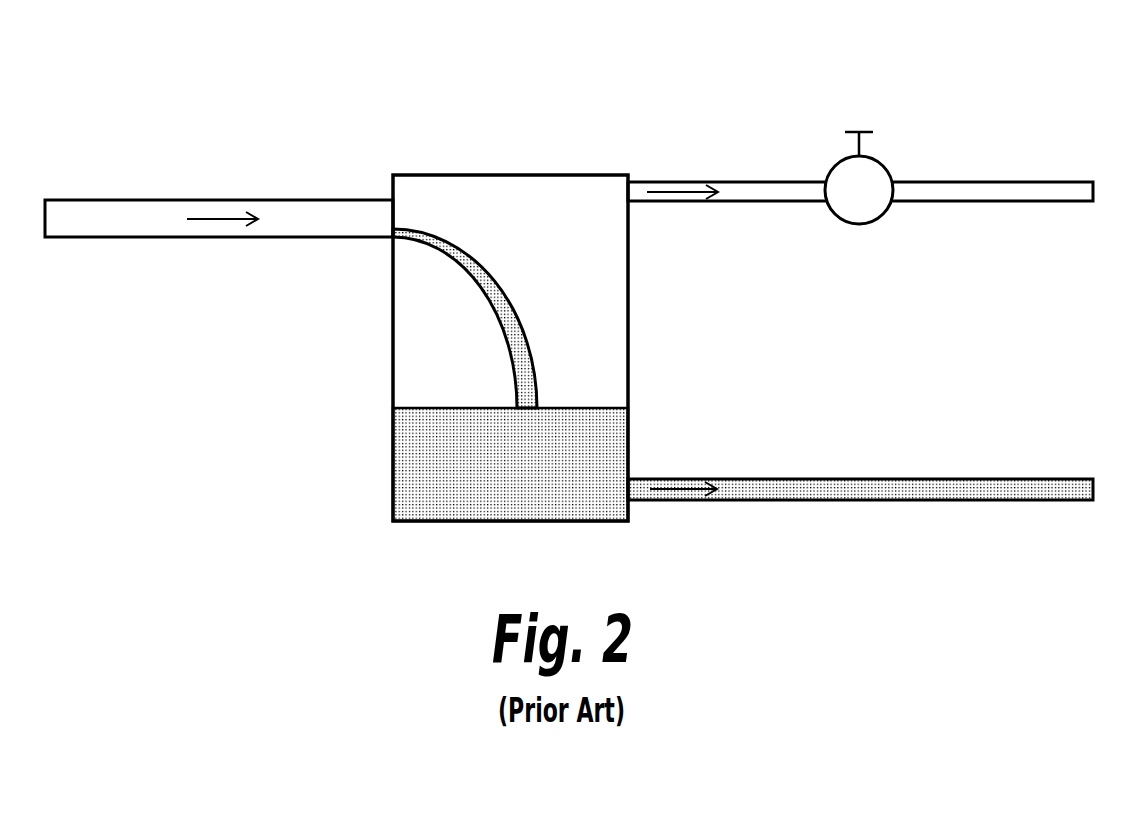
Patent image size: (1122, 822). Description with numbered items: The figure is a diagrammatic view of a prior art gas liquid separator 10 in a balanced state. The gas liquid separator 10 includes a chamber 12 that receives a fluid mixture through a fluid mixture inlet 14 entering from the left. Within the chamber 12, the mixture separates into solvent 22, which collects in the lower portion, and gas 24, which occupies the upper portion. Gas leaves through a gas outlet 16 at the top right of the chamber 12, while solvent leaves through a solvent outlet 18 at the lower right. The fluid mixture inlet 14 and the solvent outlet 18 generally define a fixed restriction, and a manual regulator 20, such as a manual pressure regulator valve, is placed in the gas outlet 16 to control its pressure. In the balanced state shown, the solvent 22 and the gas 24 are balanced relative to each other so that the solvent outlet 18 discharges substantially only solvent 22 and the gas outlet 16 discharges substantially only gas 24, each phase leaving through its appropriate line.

The gas liquid separator 10 is at (608, 82).
The chamber 12 is at (565, 173).
The fluid mixture inlet 14 is at (180, 200).
The gas outlet 16 is at (658, 180).
The solvent outlet 18 is at (655, 478).
The manual regulator 20 is at (873, 175).
The solvent 22 is at (580, 415).
The gas 24 is at (463, 212).